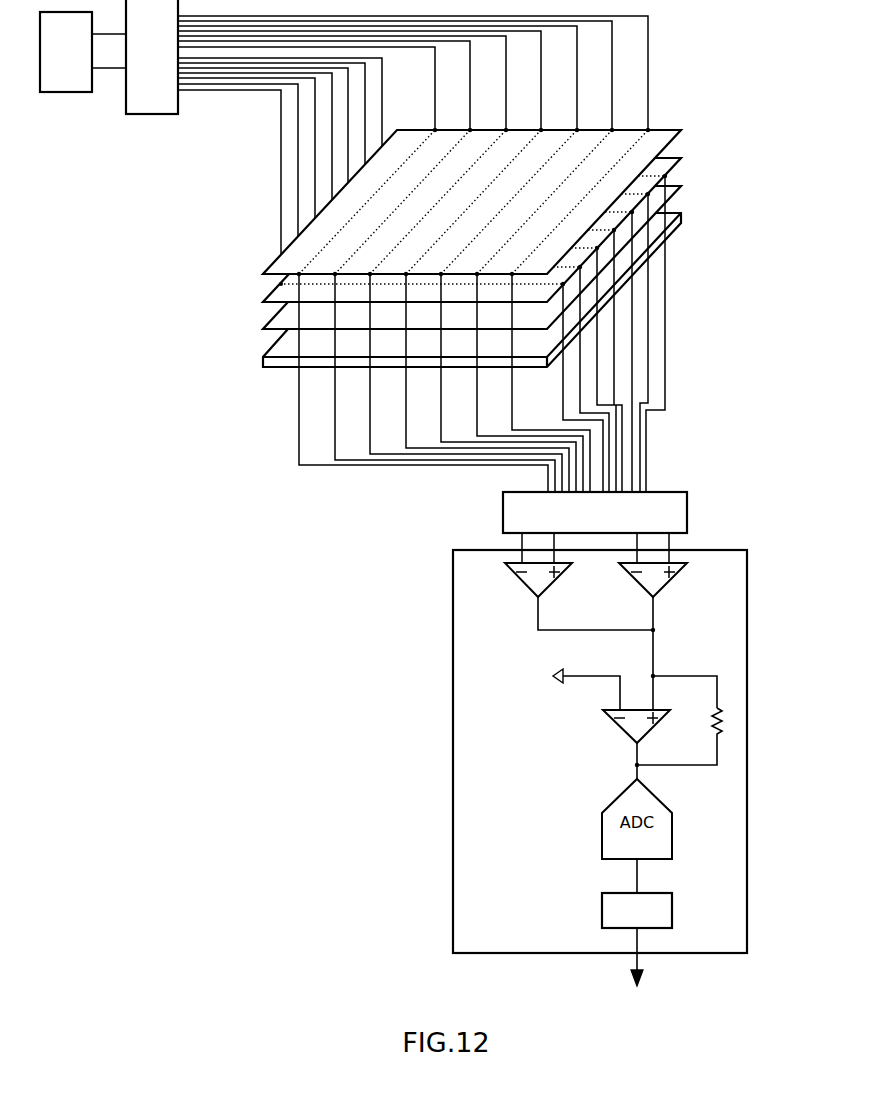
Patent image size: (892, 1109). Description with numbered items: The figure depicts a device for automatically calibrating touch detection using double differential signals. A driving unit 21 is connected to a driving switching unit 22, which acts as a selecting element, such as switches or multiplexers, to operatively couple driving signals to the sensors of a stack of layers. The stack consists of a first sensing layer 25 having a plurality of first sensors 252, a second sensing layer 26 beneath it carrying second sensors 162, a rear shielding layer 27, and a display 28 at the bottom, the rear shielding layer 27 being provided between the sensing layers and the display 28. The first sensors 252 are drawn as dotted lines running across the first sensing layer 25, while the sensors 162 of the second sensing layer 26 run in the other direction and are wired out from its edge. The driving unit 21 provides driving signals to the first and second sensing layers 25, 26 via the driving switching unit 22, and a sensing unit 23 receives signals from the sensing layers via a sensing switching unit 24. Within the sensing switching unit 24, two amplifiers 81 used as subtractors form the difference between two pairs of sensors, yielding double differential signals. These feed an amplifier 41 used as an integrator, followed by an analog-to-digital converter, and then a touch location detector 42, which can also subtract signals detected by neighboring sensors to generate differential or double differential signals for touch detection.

The driving unit 21 is at (56, 62).
The driving switching unit 22 is at (142, 62).
The sensing unit 23 is at (585, 523).
The sensing switching unit 24 is at (747, 657).
The first sensing layer 25 is at (672, 130).
The second sensing layer 26 is at (672, 158).
The rear shielding layer 27 is at (672, 186).
The display 28 is at (672, 213).
The first sensors 252 is at (627, 150).
The second electrodes 162 is at (318, 287).
The amplifier 81 is at (503, 563).
The amplifier 41 is at (622, 732).
The touch location detector 42 is at (627, 923).